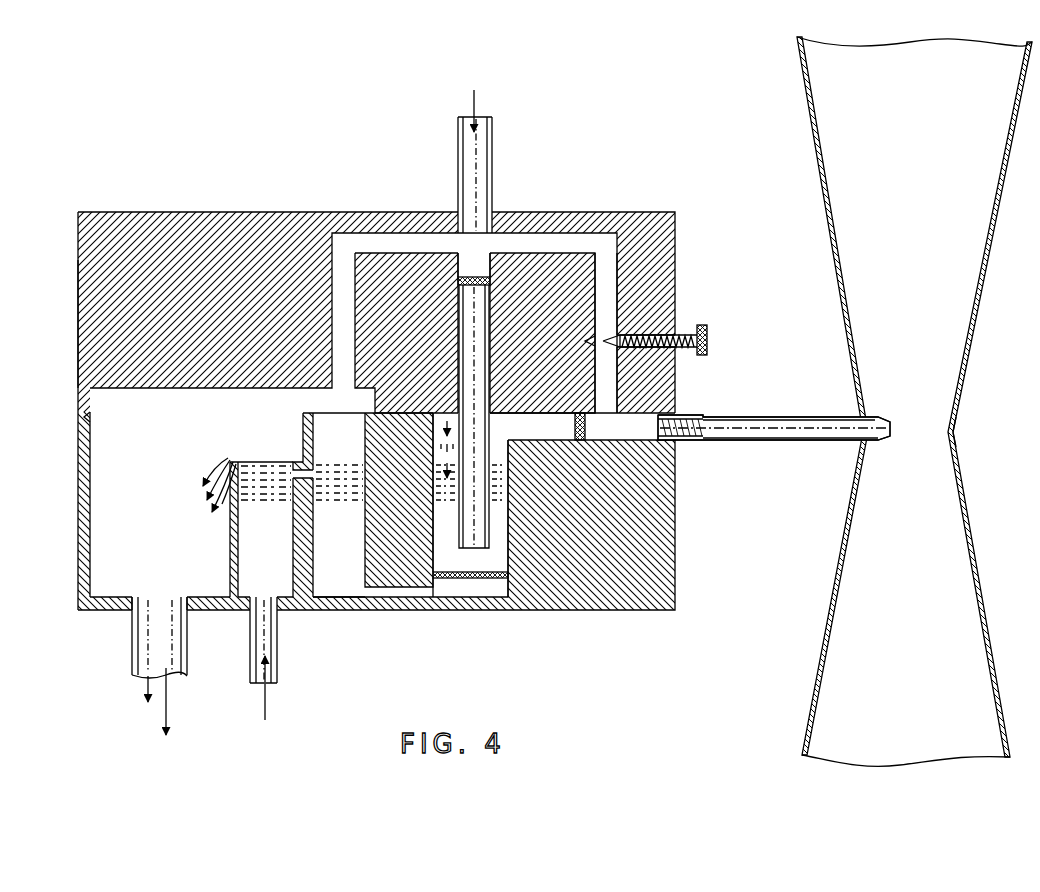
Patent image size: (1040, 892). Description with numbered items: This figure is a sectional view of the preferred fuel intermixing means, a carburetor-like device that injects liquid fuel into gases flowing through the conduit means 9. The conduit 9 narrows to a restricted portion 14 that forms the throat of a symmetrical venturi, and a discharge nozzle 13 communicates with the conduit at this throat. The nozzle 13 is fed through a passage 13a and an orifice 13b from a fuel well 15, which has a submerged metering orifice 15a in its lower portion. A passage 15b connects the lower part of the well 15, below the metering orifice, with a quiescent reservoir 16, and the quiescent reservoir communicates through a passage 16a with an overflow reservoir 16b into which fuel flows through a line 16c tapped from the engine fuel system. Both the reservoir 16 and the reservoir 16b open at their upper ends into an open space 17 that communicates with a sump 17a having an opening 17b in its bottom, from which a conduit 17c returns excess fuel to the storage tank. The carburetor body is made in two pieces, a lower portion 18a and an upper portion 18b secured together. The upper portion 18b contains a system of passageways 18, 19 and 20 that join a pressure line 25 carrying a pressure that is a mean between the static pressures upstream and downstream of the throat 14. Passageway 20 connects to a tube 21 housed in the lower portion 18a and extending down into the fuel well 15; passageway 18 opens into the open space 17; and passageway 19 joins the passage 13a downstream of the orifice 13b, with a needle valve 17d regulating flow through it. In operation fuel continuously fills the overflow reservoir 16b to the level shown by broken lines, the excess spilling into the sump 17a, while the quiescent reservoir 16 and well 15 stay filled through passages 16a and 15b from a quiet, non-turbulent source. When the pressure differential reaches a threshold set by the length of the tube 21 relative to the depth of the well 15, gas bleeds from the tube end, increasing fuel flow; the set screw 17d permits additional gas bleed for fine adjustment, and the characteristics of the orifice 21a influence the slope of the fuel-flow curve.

The conduit means 9 is at (806, 118).
The discharge nozzle 13 is at (784, 428).
The passage 13a is at (798, 442).
The orifice 13b is at (586, 423).
The restricted portion 14 is at (957, 433).
The fuel well 15 is at (470, 505).
The submerged metering orifice 15a is at (490, 590).
The passage 15b is at (403, 588).
The quiescent reservoir 16 is at (336, 597).
The passage 16a is at (310, 476).
The overflow reservoir 16b is at (261, 529).
The line 16c is at (278, 668).
The open space 17 is at (232, 492).
The sump 17a is at (195, 485).
The opening 17b is at (160, 606).
The conduit 17c is at (183, 652).
The needle valve 17d is at (707, 332).
The passageway 18 is at (376, 317).
The lower portion of carburetor body 18a is at (78, 465).
The upper portion of carburetor body 18b is at (78, 346).
The passageway 19 is at (604, 333).
The passageway 20 is at (474, 265).
The tube 21 is at (488, 438).
The orifice 21a is at (474, 293).
The pressure line 25 is at (493, 163).